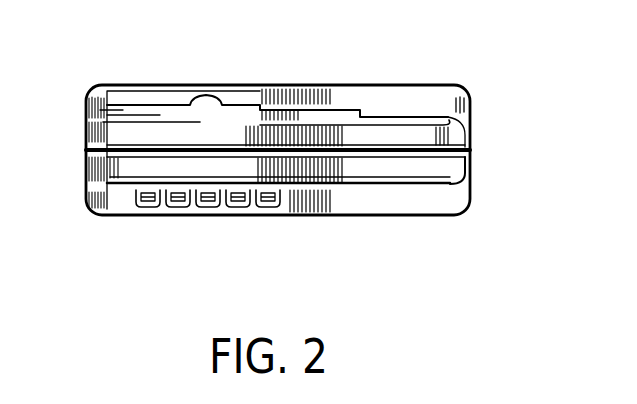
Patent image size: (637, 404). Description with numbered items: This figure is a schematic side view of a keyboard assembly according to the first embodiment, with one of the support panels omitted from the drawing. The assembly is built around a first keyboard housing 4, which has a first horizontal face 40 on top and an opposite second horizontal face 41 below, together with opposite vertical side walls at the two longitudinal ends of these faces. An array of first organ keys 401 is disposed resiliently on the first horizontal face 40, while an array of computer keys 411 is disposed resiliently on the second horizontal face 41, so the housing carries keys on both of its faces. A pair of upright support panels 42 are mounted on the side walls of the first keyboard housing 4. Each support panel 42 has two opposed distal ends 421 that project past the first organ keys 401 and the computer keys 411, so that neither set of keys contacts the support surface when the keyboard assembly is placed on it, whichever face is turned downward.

The first keyboard housing 4 is at (130, 150).
The first horizontal face 40 is at (253, 85).
The first organ keys 401 is at (362, 100).
The second horizontal face 41 is at (381, 188).
The computer keys 411 is at (200, 207).
The support panels 42 is at (410, 97).
The distal ends 421 is at (160, 85).